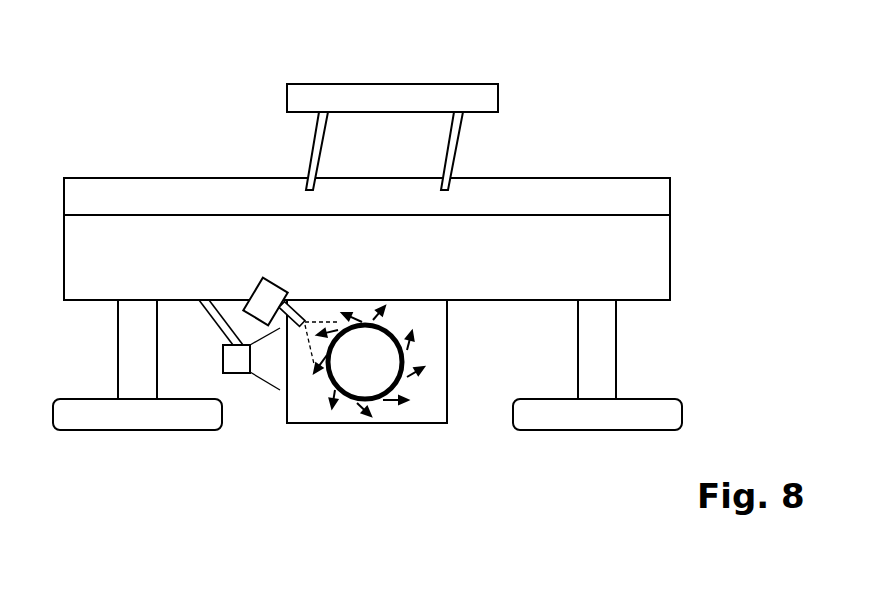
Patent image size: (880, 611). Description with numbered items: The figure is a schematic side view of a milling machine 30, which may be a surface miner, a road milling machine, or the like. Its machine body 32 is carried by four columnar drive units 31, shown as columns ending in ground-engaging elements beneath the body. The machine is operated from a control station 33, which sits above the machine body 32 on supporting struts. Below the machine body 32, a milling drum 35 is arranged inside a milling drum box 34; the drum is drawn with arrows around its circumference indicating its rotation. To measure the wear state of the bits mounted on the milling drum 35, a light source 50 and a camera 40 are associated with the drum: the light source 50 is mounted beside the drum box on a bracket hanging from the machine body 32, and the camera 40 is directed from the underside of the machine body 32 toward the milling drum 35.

The milling machine 30 is at (619, 148).
The columnar drive units 31 is at (603, 351).
The machine body 32 is at (657, 256).
The control station 33 is at (393, 98).
The milling drum box 34 is at (437, 351).
The milling drum 35 is at (403, 395).
The camera 40 is at (285, 273).
The light source 50 is at (246, 403).